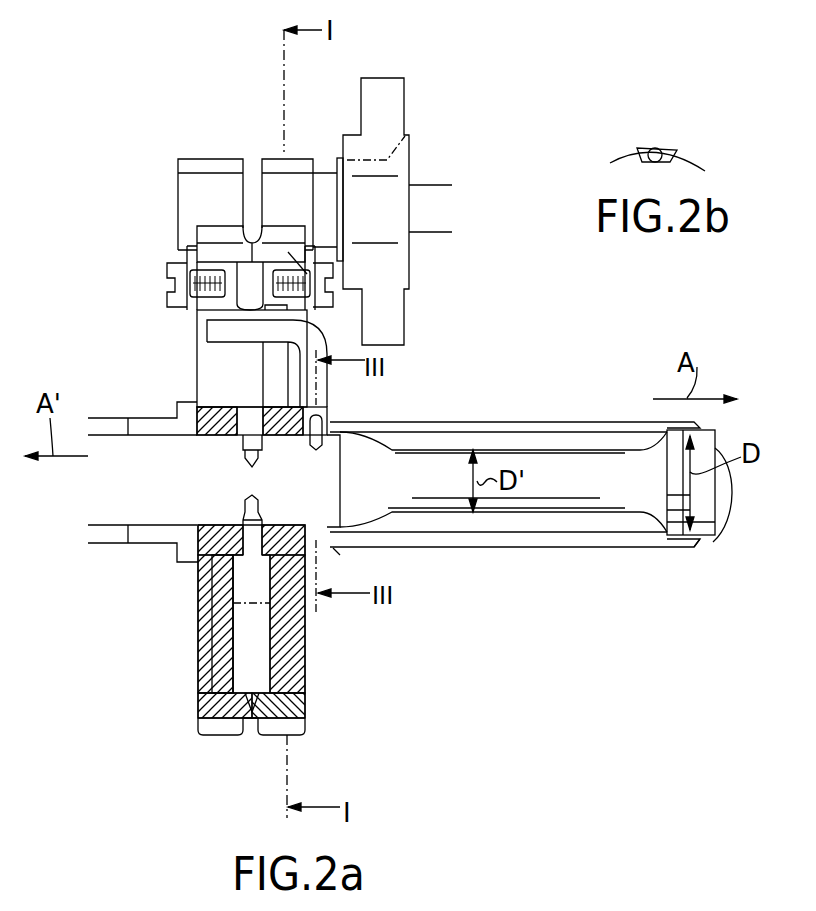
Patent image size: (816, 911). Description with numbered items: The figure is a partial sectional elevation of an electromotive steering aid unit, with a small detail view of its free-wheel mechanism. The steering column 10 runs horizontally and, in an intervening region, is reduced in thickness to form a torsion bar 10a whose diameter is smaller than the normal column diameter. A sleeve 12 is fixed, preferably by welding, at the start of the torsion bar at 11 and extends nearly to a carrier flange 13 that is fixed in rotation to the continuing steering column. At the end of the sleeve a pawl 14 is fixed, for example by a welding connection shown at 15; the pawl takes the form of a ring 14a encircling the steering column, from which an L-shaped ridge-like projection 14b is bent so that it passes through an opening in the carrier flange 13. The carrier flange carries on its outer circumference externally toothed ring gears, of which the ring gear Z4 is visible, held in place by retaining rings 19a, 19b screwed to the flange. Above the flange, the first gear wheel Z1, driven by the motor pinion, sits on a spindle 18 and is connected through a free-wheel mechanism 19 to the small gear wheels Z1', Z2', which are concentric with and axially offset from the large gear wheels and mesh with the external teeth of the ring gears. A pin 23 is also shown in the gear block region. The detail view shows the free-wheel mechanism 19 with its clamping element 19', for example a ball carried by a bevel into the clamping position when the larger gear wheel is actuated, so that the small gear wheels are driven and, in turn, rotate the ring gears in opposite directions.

In FIG. 2a, the steering column 10 is at (723, 513).
In FIG. 2a, the torsion bar 10a is at (573, 503).
In FIG. 2a, the start of the torsion bar 11 is at (701, 541).
In FIG. 2a, the sleeve 12 is at (563, 422).
In FIG. 2a, the carrier flange 13 is at (213, 625).
In FIG. 2a, the pawl 14 is at (322, 402).
In FIG. 2a, the ring 14a is at (321, 537).
In FIG. 2a, the projection 14b is at (218, 332).
In FIG. 2a, the welding connection 15 is at (332, 408).
In FIG. 2a, the spindle 18 is at (325, 182).
In FIG. 2a, the free-wheel mechanism 19 is at (402, 133).
In FIG. 2b, the free-wheel mechanism 19 is at (677, 156).
In FIG. 2b, the clamping element 19' is at (660, 124).
In FIG. 2a, the retaining ring 19a is at (188, 258).
In FIG. 2a, the retaining ring 19b is at (313, 257).
In FIG. 2a, the pin 23 is at (315, 300).
In FIG. 2a, the first gear wheel Z1 is at (397, 184).
In FIG. 2a, the small gear wheel Z1' is at (294, 183).
In FIG. 2a, the small gear wheel Z2' is at (210, 171).
In FIG. 2a, the ring gear Z4 is at (210, 248).